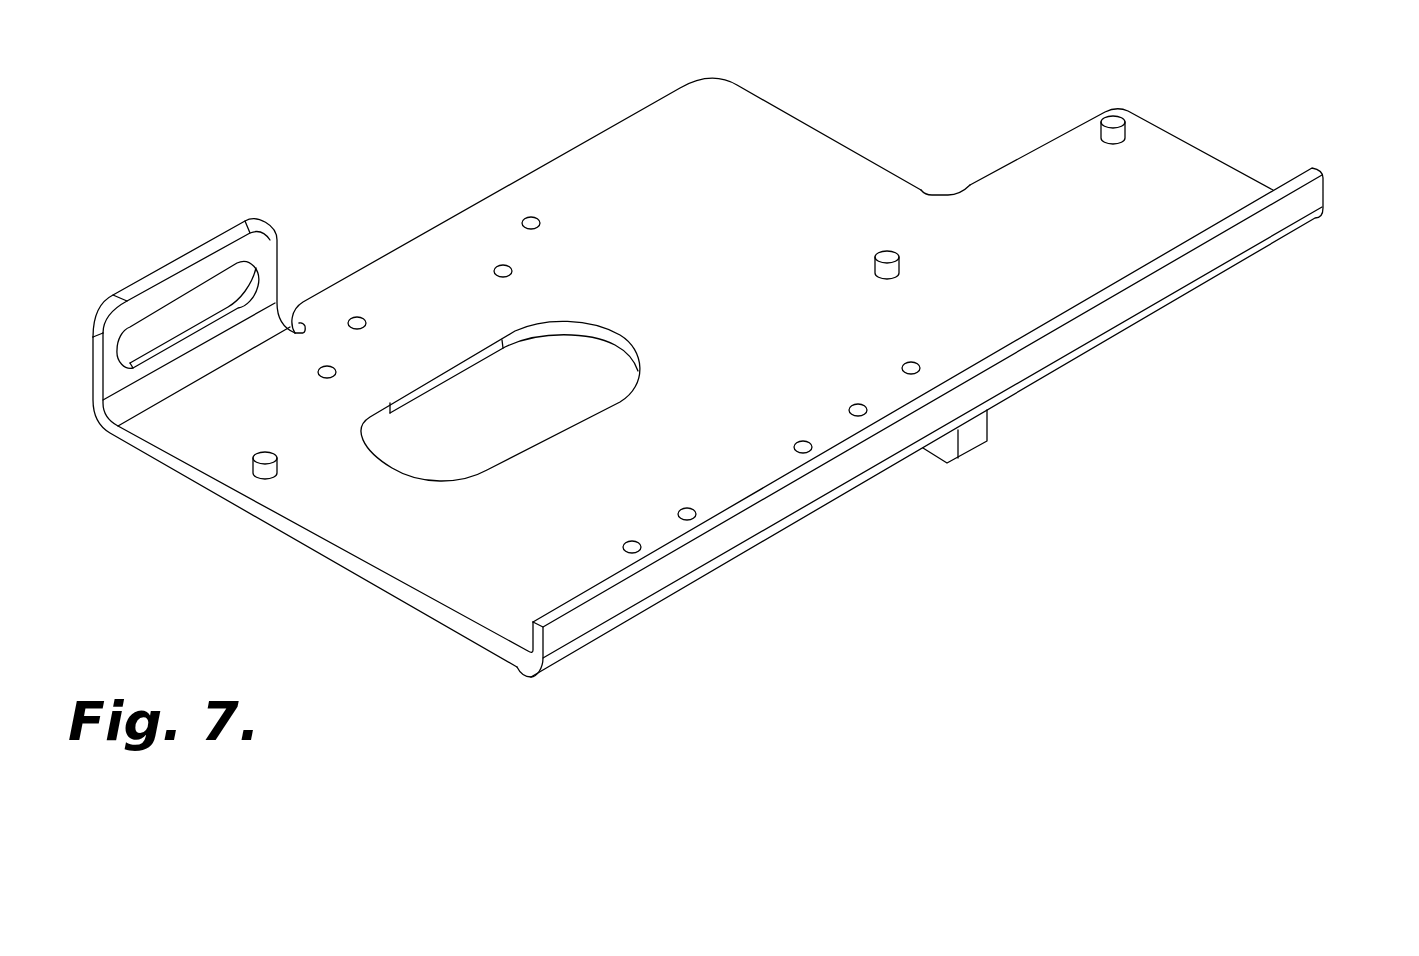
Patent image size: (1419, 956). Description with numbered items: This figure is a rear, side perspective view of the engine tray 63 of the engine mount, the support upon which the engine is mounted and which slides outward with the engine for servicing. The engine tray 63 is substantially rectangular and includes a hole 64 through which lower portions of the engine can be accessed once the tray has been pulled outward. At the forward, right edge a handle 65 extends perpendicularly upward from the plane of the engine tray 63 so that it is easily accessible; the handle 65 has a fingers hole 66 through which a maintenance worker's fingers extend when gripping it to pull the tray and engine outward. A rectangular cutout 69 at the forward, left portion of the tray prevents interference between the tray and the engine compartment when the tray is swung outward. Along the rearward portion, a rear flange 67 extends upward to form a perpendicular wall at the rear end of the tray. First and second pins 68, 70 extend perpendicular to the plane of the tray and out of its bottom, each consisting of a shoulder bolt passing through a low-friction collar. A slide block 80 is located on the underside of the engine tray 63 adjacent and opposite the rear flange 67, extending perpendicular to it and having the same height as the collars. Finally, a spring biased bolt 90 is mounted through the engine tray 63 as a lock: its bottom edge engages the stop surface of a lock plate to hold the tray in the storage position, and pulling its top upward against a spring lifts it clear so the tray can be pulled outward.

The engine tray 63 is at (497, 145).
The hole 64 is at (608, 330).
The handle 65 is at (220, 262).
The fingers hole 66 is at (172, 318).
The rear flange 67 is at (1313, 196).
The first pin 68 is at (1128, 133).
The rectangular cutout 69 is at (940, 165).
The second pin 70 is at (900, 263).
The slide block 80 is at (977, 432).
The spring biased bolt 90 is at (257, 470).